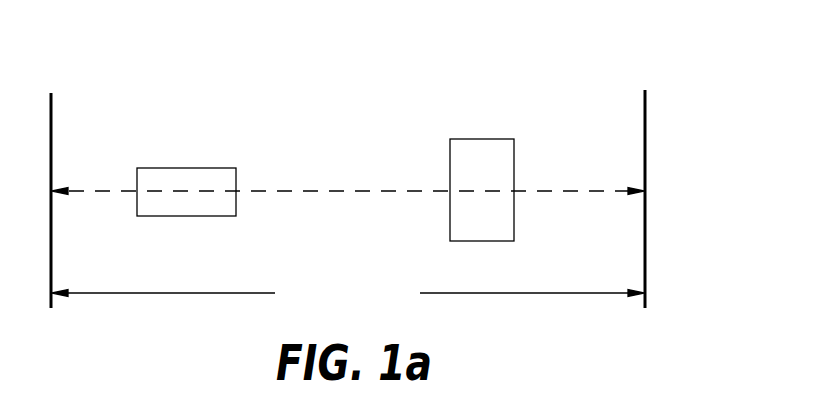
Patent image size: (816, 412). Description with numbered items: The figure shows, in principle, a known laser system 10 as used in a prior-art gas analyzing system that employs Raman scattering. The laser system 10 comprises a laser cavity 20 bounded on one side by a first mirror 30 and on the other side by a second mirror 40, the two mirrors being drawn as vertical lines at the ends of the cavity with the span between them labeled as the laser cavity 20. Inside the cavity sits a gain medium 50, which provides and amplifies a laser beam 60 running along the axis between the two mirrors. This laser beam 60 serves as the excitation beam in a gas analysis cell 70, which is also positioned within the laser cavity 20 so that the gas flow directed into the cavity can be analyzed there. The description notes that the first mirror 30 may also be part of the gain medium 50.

The laser system 10 is at (348, 92).
The laser cavity 20 is at (348, 293).
The first mirror 30 is at (52, 118).
The second mirror 40 is at (644, 113).
The gain medium 50 is at (188, 168).
The laser beam 60 is at (311, 191).
The gas analysis cell 70 is at (479, 139).